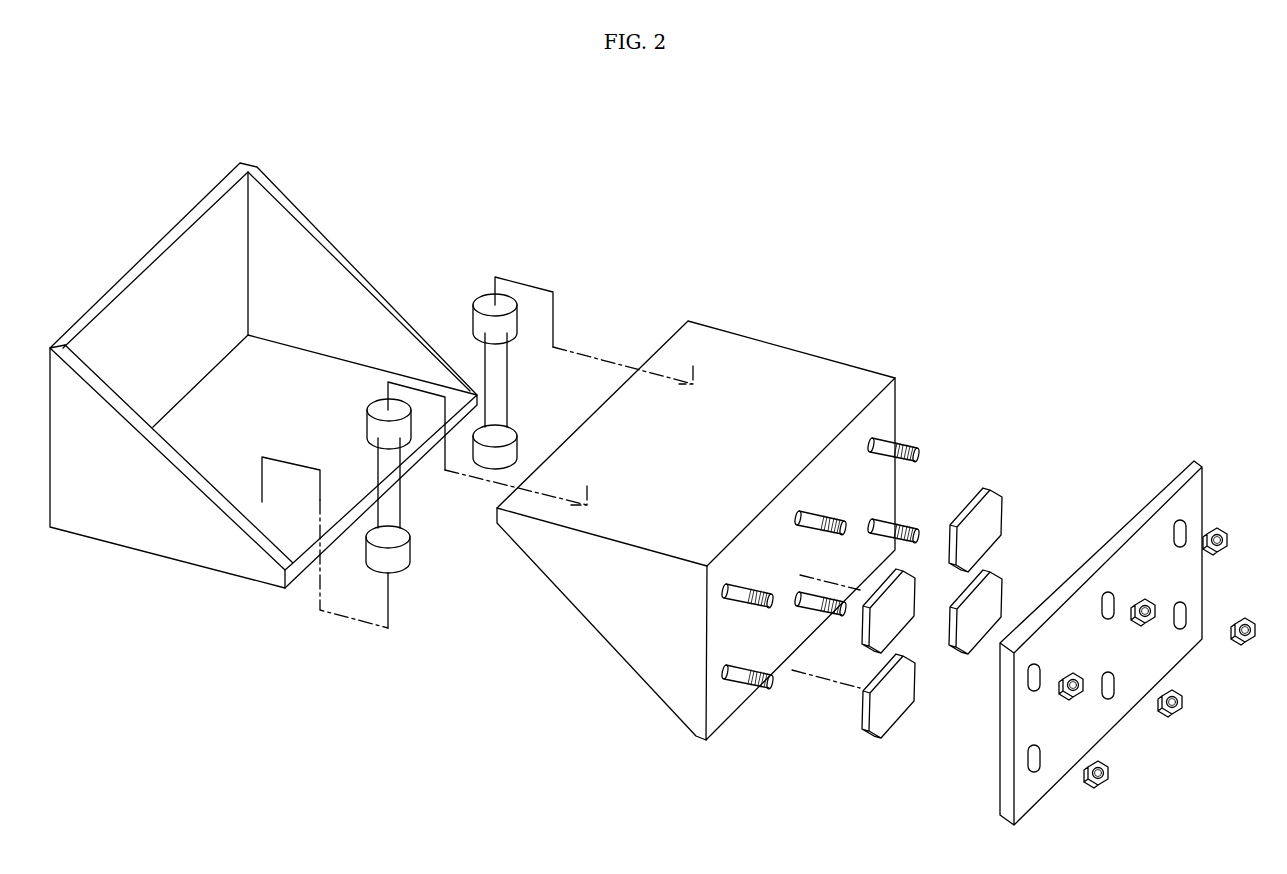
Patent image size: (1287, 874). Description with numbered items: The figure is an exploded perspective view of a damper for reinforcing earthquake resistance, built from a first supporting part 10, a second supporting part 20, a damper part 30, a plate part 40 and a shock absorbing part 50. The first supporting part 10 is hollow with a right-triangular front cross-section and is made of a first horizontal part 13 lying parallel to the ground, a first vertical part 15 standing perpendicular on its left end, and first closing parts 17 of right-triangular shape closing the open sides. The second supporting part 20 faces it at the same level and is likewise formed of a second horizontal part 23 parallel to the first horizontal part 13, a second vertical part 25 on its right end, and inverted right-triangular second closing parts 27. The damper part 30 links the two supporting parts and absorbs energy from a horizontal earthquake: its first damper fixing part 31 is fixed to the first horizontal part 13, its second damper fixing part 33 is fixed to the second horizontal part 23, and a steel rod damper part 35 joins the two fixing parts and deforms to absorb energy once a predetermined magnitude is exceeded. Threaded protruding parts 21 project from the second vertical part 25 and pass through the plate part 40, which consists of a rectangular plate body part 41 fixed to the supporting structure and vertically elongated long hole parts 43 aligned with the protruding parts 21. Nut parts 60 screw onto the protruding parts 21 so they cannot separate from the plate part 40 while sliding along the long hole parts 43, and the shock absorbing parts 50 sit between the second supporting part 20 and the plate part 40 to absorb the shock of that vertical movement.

The first supporting part 10 is at (263, 398).
The first horizontal part 13 is at (278, 532).
The first vertical part 15 is at (193, 260).
The first closing part 17 is at (163, 545).
The second supporting part 20 is at (730, 474).
The protruding parts 21 is at (768, 679).
The second horizontal part 23 is at (768, 355).
The second vertical part 25 is at (883, 418).
The second closing part 27 is at (623, 633).
The damper part 30 is at (529, 398).
The first damper fixing part 31 is at (510, 450).
The second damper fixing part 33 is at (485, 292).
The steel rod damper part 35 is at (490, 360).
The plate part 40 is at (1111, 588).
The plate body part 41 is at (1196, 500).
The long hole part 43 is at (1176, 528).
The shock absorbing part 50 is at (997, 500).
The nut part 60 is at (1100, 784).